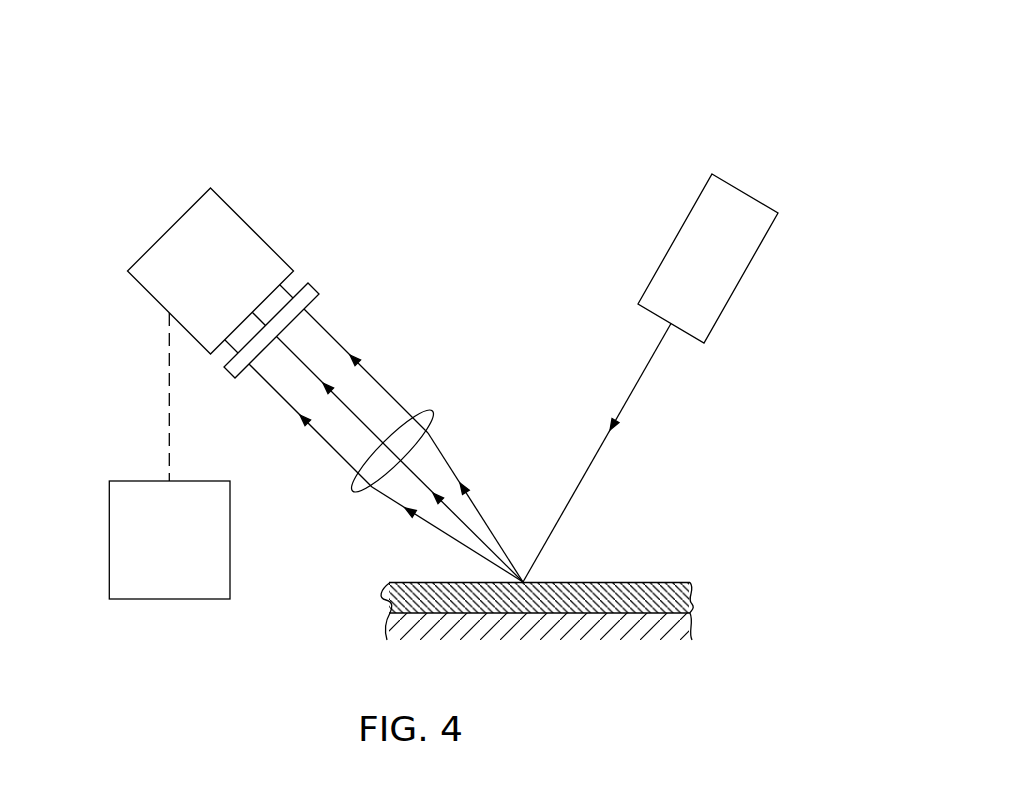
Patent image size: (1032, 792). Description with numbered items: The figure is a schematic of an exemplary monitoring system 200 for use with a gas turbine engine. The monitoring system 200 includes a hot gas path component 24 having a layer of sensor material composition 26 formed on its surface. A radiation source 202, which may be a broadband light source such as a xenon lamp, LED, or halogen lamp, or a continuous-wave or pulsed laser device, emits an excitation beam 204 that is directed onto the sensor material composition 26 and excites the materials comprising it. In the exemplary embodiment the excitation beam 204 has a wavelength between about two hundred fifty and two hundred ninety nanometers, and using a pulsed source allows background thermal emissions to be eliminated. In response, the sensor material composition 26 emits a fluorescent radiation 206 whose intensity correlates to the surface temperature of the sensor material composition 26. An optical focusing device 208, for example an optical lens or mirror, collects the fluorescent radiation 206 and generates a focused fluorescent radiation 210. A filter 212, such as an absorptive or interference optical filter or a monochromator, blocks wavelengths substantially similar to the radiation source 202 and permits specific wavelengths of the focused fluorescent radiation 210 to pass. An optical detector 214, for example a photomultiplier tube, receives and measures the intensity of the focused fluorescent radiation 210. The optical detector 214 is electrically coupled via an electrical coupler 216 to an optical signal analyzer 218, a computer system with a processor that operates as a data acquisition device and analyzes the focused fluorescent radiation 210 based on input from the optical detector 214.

The monitoring system 200 is at (672, 67).
The radiation source 202 is at (742, 287).
The excitation beam 204 is at (641, 381).
The fluorescent radiation 206 is at (448, 458).
The optical focusing device 208 is at (432, 409).
The focused fluorescent radiation 210 is at (321, 323).
The filter 212 is at (318, 289).
The optical detector 214 is at (257, 221).
The electrical coupler 216 is at (167, 397).
The optical signal analyzer 218 is at (108, 537).
The sensor material composition 26 is at (652, 580).
The hot gas path component 24 is at (690, 622).